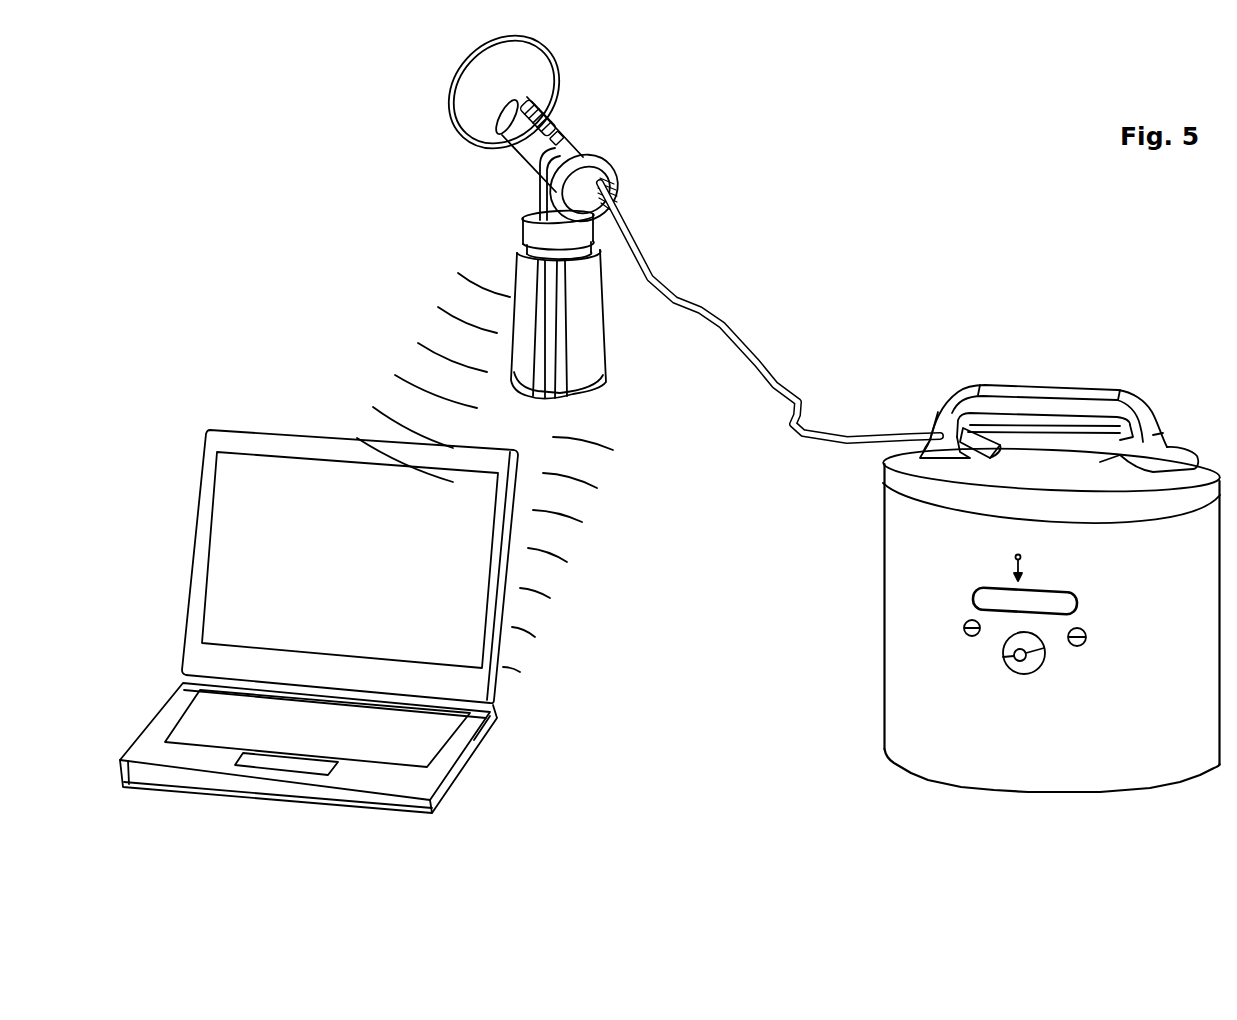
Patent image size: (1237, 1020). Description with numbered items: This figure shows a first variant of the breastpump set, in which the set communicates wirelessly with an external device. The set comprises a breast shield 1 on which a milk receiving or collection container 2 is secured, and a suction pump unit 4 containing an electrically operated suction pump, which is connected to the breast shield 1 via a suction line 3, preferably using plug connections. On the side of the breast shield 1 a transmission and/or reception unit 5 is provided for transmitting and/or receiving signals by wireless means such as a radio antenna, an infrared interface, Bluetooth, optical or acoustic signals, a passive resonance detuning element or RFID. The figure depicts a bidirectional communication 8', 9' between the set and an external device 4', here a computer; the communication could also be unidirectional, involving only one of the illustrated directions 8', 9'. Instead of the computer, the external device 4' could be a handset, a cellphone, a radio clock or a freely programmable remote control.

The breast shield 1 is at (574, 82).
The milk receiving or collection container 2 is at (577, 343).
The suction line 3 is at (753, 360).
The suction pump unit 4 is at (998, 588).
The external device 4' is at (359, 621).
The transmission and/or reception unit 5 is at (560, 117).
The communication direction 8' is at (426, 375).
The communication direction 9' is at (588, 554).